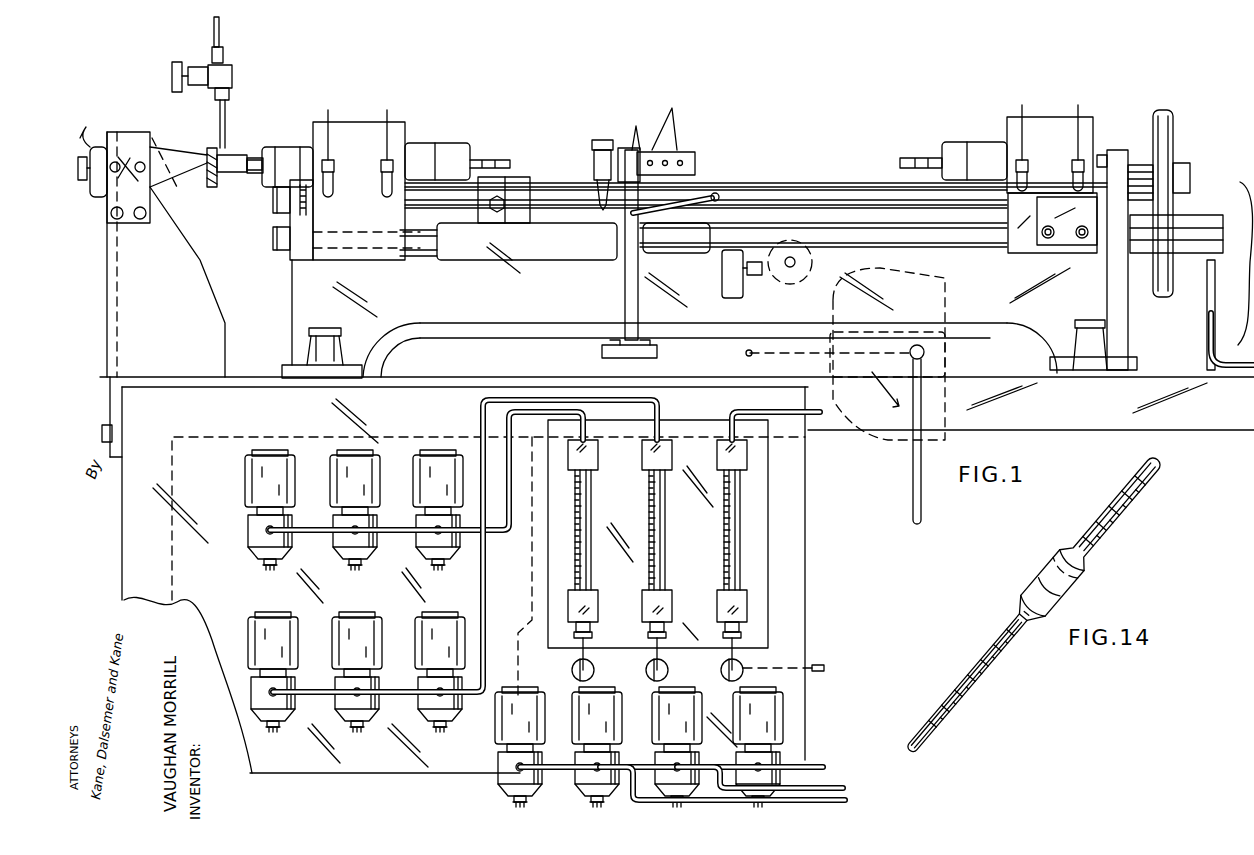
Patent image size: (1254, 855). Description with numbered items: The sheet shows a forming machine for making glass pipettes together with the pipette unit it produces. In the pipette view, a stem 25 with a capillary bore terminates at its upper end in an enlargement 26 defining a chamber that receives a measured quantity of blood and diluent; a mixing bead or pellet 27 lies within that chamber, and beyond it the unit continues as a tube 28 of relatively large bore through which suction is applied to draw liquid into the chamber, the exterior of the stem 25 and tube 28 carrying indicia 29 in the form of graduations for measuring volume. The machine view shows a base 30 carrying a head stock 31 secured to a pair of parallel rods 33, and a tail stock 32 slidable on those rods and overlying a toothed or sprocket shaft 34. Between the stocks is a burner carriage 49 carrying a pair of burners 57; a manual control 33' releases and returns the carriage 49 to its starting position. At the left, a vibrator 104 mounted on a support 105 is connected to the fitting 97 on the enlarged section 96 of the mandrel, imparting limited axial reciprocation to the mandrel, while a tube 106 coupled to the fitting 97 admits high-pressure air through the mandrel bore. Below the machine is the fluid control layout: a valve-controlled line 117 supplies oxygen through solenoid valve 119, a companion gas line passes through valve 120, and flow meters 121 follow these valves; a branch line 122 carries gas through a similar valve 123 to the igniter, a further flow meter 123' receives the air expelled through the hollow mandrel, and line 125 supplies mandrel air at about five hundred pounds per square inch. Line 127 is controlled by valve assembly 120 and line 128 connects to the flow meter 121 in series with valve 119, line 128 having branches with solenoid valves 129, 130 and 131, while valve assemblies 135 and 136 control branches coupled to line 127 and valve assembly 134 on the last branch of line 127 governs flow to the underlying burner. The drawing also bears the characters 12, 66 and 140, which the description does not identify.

In FIG. 1, the direction arrow 12 is at (369, 174).
In FIG. 1, the base 30 is at (485, 340).
In FIG. 1, the head stock 31 is at (348, 128).
In FIG. 1, the tail stock 32 is at (1040, 128).
In FIG. 1, the parallel rods 33 is at (703, 266).
In FIG. 1, the manual control 33' is at (887, 396).
In FIG. 1, the toothed or sprocket shaft 34 is at (802, 195).
In FIG. 1, the burner carriage 49 is at (645, 197).
In FIG. 1, the burners 57 is at (688, 158).
In FIG. 1, the gear train 66 is at (1125, 163).
In FIG. 1, the enlarged section of the mandrel 96 is at (245, 175).
In FIG. 1, the fitting 97 is at (227, 157).
In FIG. 1, the vibrator 104 is at (128, 157).
In FIG. 1, the support 105 is at (193, 334).
In FIG. 1, the tube 106 is at (228, 112).
In FIG. 1, the valve-controlled line 117 is at (820, 792).
In FIG. 1, the valve 119 is at (667, 765).
In FIG. 1, the valve 120 is at (590, 775).
In FIG. 1, the flow meters 121 is at (650, 512).
In FIG. 1, the branch line 122 is at (570, 755).
In FIG. 1, the valve 123 is at (498, 748).
In FIG. 1, the flow meter 123' is at (744, 546).
In FIG. 1, the line 125 is at (817, 665).
In FIG. 1, the line 127 is at (502, 533).
In FIG. 1, the line 128 is at (483, 598).
In FIG. 1, the solenoid-controlled valve 129 is at (465, 707).
In FIG. 1, the solenoid-controlled valve 130 is at (385, 707).
In FIG. 1, the solenoid-controlled valve 131 is at (297, 707).
In FIG. 1, the valve assembly 134 is at (252, 540).
In FIG. 1, the valve assembly 135 is at (345, 545).
In FIG. 1, the valve assembly 136 is at (425, 540).
In FIG. 1, the solenoid valve 140 is at (780, 755).
In FIG. 14, the stem 25 is at (1019, 656).
In FIG. 14, the enlargement 26 is at (1034, 571).
In FIG. 14, the mixing bead or pellet 27 is at (1088, 583).
In FIG. 14, the tube 28 is at (1049, 618).
In FIG. 14, the indicia 29 is at (1030, 598).